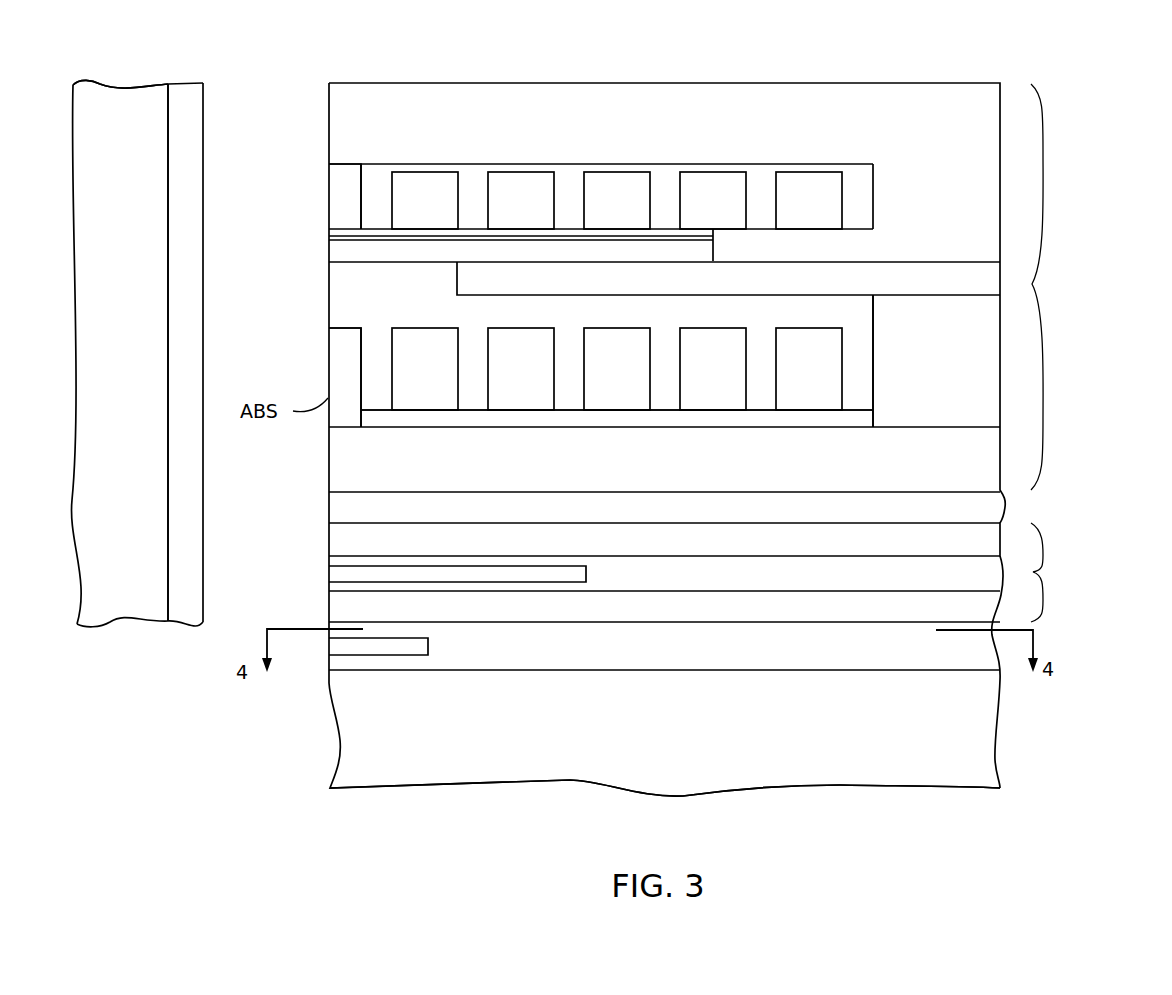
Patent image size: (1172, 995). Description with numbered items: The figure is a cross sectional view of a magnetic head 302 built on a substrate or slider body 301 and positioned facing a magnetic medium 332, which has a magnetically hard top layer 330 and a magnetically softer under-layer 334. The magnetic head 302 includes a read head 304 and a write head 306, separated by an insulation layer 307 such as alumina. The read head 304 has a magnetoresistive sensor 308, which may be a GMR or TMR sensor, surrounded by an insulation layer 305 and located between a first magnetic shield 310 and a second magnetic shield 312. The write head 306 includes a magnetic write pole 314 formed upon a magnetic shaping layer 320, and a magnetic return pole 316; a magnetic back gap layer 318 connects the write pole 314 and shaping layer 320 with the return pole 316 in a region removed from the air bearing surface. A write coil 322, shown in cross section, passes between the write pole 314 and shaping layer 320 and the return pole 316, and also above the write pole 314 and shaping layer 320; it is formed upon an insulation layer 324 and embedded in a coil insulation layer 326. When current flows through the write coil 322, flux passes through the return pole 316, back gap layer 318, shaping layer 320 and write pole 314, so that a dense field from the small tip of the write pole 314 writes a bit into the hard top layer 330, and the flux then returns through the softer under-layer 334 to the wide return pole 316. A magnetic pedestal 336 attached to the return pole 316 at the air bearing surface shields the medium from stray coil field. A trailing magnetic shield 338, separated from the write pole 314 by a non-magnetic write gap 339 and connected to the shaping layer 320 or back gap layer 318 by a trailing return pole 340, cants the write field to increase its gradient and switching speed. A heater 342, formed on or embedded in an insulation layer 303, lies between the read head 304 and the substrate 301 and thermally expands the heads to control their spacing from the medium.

The substrate or slider body 301 is at (719, 719).
The magnetic head 302 is at (746, 81).
The insulation layer 303 is at (694, 648).
The read head 304 is at (1043, 535).
The insulation layer 305 is at (792, 574).
The write head 306 is at (1043, 103).
The insulation layer 307 is at (912, 509).
The magnetoresistive sensor 308 is at (587, 575).
The first magnetic shield 310 is at (674, 606).
The second magnetic shield 312 is at (676, 540).
The magnetic write pole 314 is at (334, 250).
The magnetic return pole 316 is at (679, 457).
The magnetic back gap layer 318 is at (944, 353).
The magnetic shaping layer 320 is at (766, 279).
The write coil 322 is at (450, 197).
The insulation layer 324 is at (778, 248).
The coil insulation layer 326 is at (663, 182).
The magnetically hard top layer 330 is at (193, 100).
The magnetic medium 332 is at (121, 76).
The magnetically softer under-layer 334 is at (141, 275).
The magnetic pedestal 336 is at (336, 358).
The trailing magnetic shield 338 is at (348, 196).
The non-magnetic write gap 339 is at (335, 236).
The trailing return pole 340 is at (626, 118).
The heater 342 is at (410, 649).